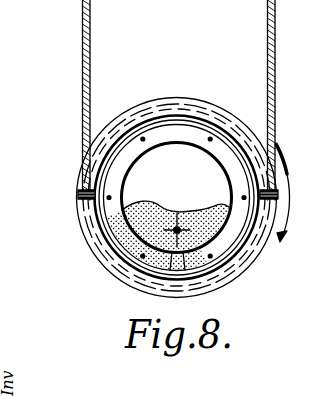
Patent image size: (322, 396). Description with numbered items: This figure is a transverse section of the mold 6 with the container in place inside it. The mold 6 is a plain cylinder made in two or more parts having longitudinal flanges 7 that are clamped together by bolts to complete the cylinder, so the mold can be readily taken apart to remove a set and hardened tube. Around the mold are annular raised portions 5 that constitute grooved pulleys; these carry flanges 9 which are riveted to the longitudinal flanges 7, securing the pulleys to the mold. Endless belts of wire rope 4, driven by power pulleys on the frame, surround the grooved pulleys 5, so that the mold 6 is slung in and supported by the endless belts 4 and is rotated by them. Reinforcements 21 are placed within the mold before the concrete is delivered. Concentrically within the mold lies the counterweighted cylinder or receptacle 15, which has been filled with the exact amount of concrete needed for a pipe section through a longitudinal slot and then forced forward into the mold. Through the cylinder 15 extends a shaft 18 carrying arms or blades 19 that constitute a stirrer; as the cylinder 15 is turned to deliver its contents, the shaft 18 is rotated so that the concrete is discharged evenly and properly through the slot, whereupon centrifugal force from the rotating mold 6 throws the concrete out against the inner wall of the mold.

The endless belts of wire rope 4 is at (92, 61).
The grooved pulleys 5 is at (176, 99).
The longitudinal flanges 7 is at (90, 203).
The flanges 9 is at (82, 193).
The reinforcements 21 is at (211, 137).
The mold 6 is at (112, 247).
The counterweighted cylinder or receptacle 15 is at (223, 232).
The arms or blades 19 is at (183, 221).
The shaft 18 is at (192, 254).